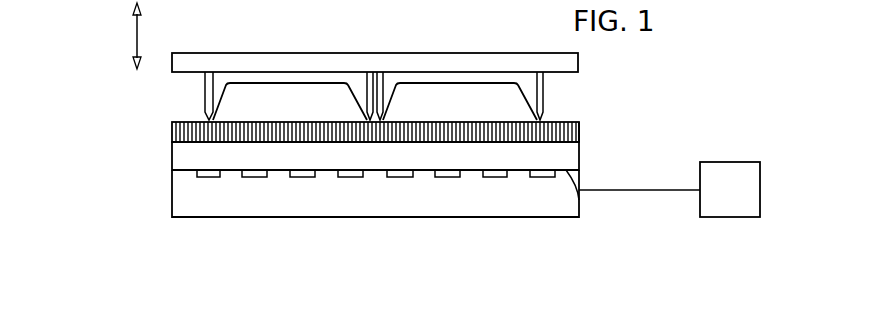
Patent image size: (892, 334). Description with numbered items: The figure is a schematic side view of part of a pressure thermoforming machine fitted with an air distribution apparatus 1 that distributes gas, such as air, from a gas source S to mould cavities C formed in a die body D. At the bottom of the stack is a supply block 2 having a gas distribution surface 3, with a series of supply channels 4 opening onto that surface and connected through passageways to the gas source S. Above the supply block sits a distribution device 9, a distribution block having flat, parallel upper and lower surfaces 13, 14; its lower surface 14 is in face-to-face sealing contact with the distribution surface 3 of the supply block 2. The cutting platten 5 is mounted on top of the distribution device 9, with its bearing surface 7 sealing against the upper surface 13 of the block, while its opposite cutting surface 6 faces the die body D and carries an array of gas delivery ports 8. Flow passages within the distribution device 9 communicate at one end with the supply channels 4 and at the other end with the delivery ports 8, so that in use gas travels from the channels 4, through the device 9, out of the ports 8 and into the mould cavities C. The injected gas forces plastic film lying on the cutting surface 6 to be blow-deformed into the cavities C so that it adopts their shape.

The air distribution apparatus 1 is at (100, 76).
The supply block 2 is at (172, 197).
The gas distribution surface 3 is at (187, 170).
The supply channels 4 is at (210, 177).
The platten 5 is at (582, 130).
The cutting surface 6 is at (186, 122).
The bearing surface 7 is at (196, 143).
The gas delivery ports 8 is at (555, 121).
The distribution device 9 is at (582, 164).
The upper surface 13 is at (552, 137).
The lower surface 14 is at (580, 207).
The mould cavities C is at (267, 100).
The die body D is at (543, 87).
The gas source S is at (735, 176).